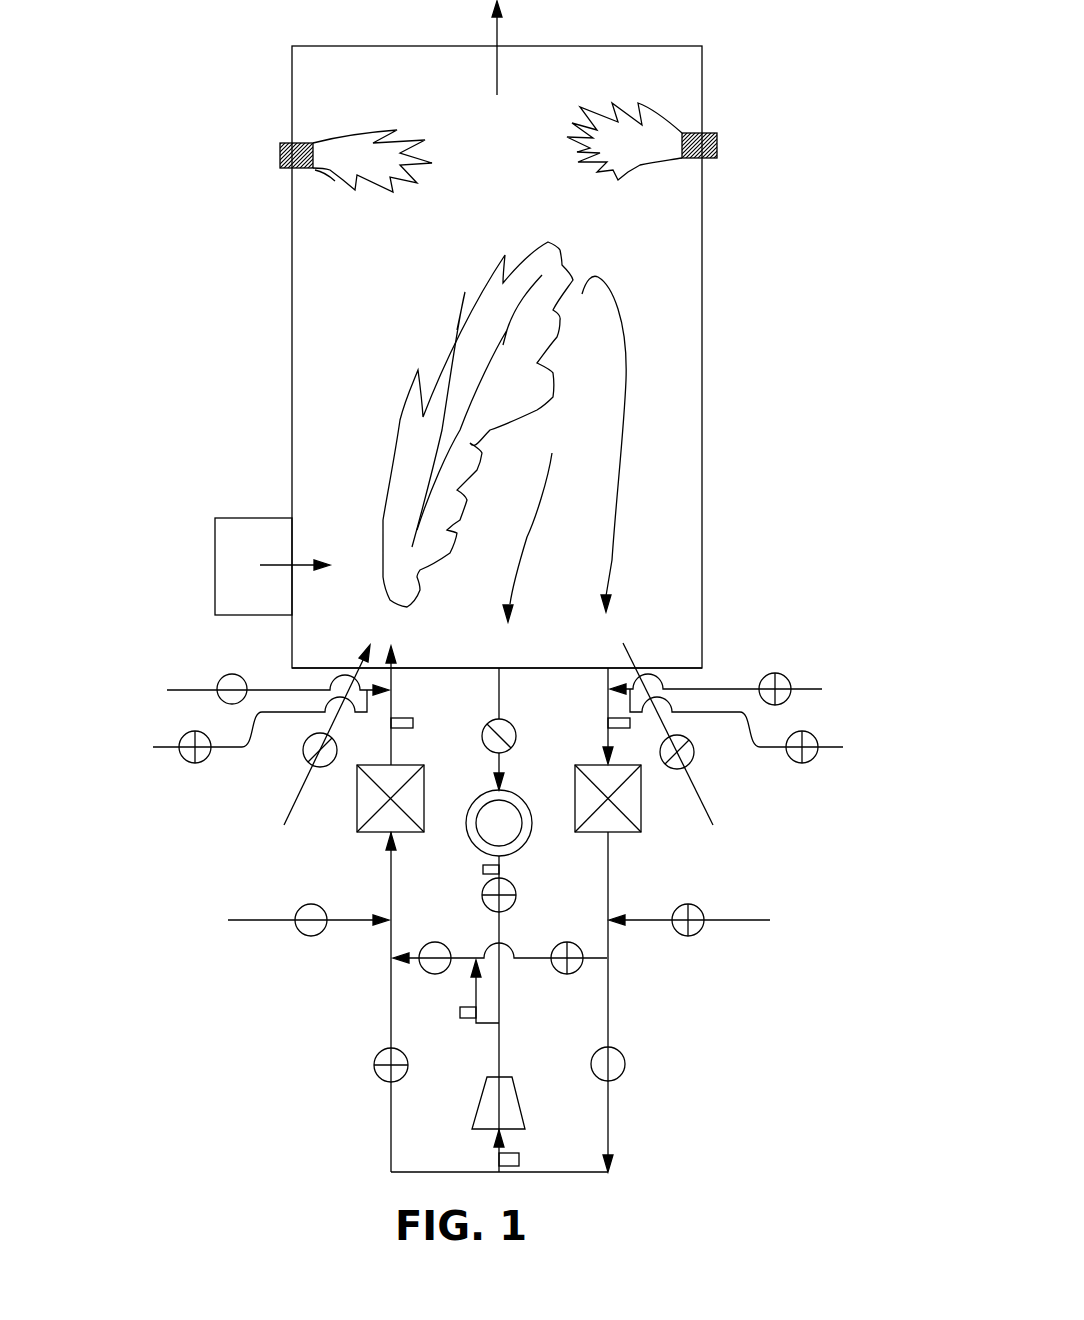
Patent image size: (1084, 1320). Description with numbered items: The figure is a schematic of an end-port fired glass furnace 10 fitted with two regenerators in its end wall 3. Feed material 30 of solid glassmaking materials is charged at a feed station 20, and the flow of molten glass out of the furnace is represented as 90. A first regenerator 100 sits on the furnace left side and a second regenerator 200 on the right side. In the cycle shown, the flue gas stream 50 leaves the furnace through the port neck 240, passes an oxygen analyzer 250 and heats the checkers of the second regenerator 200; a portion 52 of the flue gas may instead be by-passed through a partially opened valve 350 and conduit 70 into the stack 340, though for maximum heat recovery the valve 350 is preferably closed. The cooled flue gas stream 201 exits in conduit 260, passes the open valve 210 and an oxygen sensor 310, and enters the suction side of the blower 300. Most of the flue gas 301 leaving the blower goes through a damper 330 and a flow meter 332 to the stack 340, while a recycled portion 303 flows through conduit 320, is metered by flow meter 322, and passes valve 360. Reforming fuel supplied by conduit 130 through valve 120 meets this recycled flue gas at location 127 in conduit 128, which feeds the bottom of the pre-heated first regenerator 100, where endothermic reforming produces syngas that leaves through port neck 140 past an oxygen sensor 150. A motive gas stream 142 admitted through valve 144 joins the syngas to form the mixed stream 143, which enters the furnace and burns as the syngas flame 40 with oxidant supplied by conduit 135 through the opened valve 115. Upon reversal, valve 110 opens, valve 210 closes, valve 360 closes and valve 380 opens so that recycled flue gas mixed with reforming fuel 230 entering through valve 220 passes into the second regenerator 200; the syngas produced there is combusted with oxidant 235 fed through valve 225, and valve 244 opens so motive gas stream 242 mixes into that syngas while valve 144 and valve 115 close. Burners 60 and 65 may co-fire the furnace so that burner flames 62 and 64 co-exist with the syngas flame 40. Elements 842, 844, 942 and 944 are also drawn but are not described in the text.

The end wall 3 is at (422, 668).
The end-port glass furnace 10 is at (703, 322).
The feed station 20 is at (252, 518).
The feed material 30 is at (302, 565).
The syngas flame 40 is at (392, 355).
The flue gas stream 50 is at (614, 430).
The portion of flue gases 52 is at (541, 566).
The burner 60 is at (282, 143).
The burner flame 62 is at (337, 182).
The burner flame 64 is at (577, 152).
The burner 65 is at (712, 134).
The conduit 70 is at (499, 688).
The flow of molten glass 90 is at (514, 48).
The first regenerator 100 is at (357, 830).
The valve 110 is at (374, 1066).
The valve 115 is at (304, 745).
The valve 120 is at (300, 933).
The location 127 is at (392, 921).
The conduit 128 is at (385, 850).
The conduit 130 is at (245, 920).
The conduit 135 is at (300, 792).
The port neck 140 is at (397, 707).
The motive gas stream 142 is at (269, 681).
The mixed stream 143 is at (392, 645).
The valve 144 is at (222, 676).
The oxygen sensor 150 is at (413, 723).
The second regenerator 200 is at (642, 825).
The cooled flue gas stream 201 is at (607, 883).
The valve 210 is at (625, 1064).
The valve 220 is at (688, 936).
The valve 225 is at (693, 752).
The reforming fuel 230 is at (770, 920).
The oxidant 235 is at (712, 820).
The port neck 240 is at (606, 690).
The motive gas stream 242 is at (721, 681).
The valve 244 is at (768, 676).
The oxygen analyzer 250 is at (630, 723).
The conduit 260 is at (608, 1002).
The blower 300 is at (525, 1112).
The flue gas 301 is at (503, 988).
The portion of flue gas 303 is at (492, 1022).
The oxygen sensor 310 is at (519, 1158).
The conduit 320 is at (440, 1045).
The flow meter 322 is at (460, 1012).
The damper 330 is at (516, 890).
The flow meter 332 is at (483, 869).
The stack 340 is at (536, 825).
The valve 350 is at (517, 736).
The valve 360 is at (438, 942).
The valve 380 is at (566, 942).
The feed line 842 is at (222, 748).
The valve 844 is at (185, 740).
The feed line 942 is at (770, 747).
The valve 944 is at (816, 740).